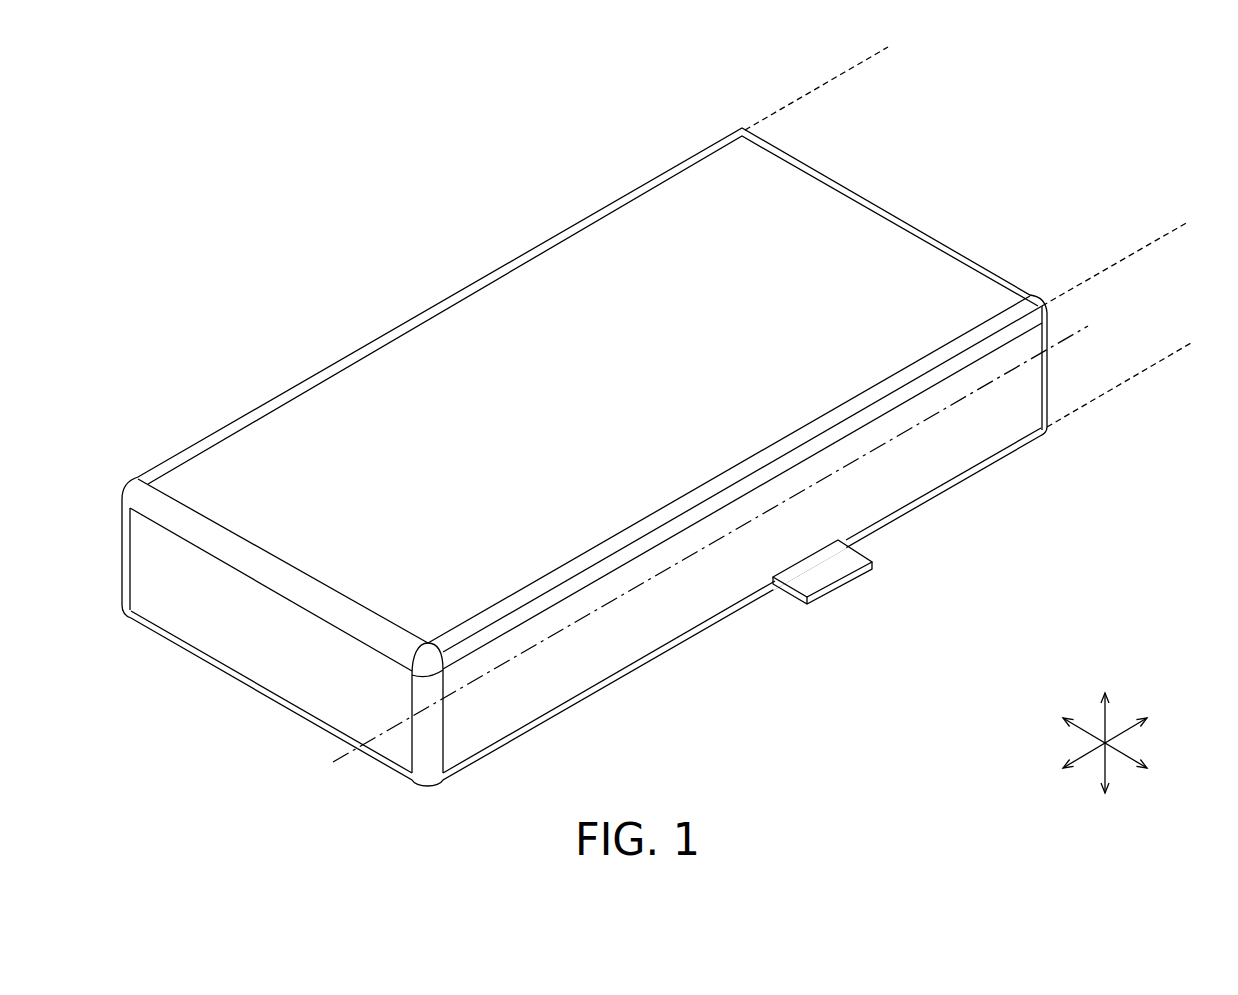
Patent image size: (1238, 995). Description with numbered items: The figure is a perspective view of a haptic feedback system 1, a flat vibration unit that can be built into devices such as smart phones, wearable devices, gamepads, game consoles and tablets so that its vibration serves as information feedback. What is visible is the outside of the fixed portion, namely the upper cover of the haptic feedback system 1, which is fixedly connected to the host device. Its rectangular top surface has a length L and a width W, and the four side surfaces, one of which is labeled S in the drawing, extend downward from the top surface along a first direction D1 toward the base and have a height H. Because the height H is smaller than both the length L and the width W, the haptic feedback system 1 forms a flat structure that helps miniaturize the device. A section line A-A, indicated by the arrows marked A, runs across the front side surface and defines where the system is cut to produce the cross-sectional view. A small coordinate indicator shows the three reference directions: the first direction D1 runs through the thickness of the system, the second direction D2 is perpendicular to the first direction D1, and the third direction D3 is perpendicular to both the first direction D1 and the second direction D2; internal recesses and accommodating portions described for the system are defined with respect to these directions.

The haptic feedback system 1 is at (101, 199).
The side surface S is at (272, 650).
The length L is at (737, 482).
The line A- A is at (428, 636).
The width W is at (1188, 218).
The height H is at (1191, 222).
The first direction D1 is at (1105, 725).
The second direction D2 is at (1126, 751).
The third direction D3 is at (1126, 734).